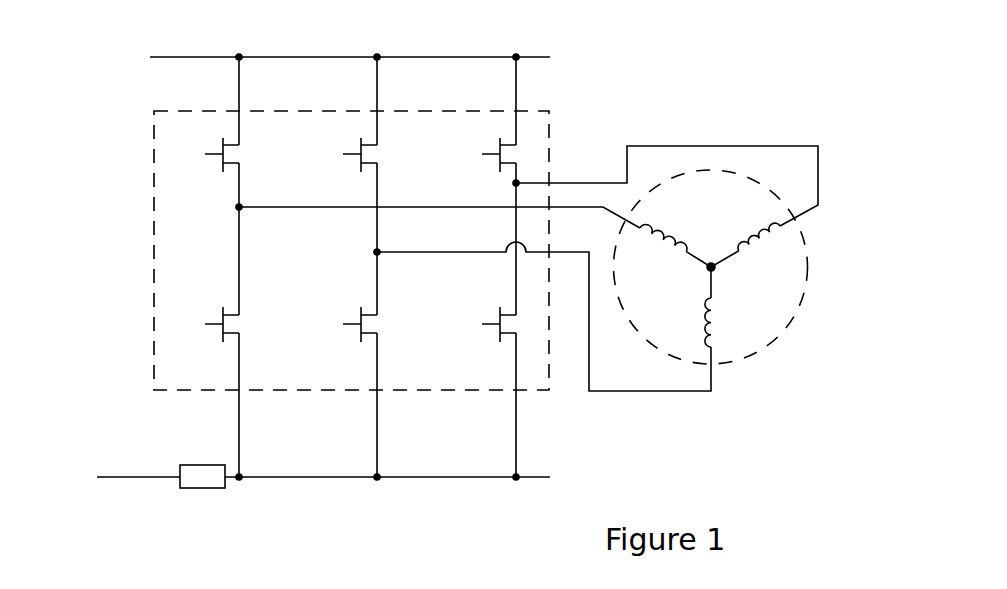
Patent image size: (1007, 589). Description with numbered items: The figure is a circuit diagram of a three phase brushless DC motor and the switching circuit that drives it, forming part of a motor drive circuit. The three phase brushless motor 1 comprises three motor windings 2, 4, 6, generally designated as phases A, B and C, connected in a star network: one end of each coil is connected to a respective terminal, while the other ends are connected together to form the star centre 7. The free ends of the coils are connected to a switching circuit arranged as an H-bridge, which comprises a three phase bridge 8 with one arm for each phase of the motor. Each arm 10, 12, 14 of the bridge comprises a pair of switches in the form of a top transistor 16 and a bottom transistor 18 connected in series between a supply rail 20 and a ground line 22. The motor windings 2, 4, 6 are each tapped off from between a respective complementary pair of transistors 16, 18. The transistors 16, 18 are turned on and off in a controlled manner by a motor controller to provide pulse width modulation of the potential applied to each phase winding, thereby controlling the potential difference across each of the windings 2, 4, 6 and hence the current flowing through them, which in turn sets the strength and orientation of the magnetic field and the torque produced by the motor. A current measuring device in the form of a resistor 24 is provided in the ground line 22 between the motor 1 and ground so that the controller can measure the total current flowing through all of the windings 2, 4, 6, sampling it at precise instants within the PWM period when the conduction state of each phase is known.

The three phase brushless motor 1 is at (806, 244).
The motor winding 2 is at (702, 318).
The motor winding 4 is at (672, 233).
The motor winding 6 is at (745, 238).
The star centre 7 is at (711, 265).
The three phase bridge 8 is at (154, 183).
The arm of the bridge 10 is at (239, 99).
The arm of the bridge 12 is at (377, 99).
The arm of the bridge 14 is at (516, 94).
The top transistor 16 is at (239, 190).
The bottom transistor 18 is at (239, 360).
The supply rail 20 is at (185, 57).
The ground line 22 is at (160, 479).
The resistor 24 is at (207, 490).